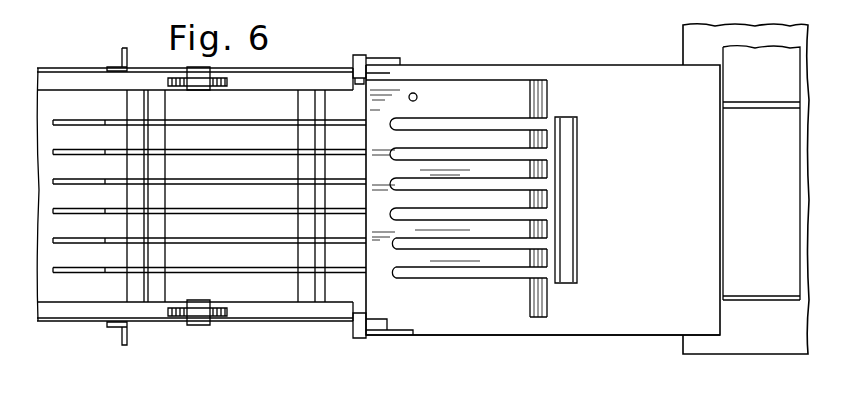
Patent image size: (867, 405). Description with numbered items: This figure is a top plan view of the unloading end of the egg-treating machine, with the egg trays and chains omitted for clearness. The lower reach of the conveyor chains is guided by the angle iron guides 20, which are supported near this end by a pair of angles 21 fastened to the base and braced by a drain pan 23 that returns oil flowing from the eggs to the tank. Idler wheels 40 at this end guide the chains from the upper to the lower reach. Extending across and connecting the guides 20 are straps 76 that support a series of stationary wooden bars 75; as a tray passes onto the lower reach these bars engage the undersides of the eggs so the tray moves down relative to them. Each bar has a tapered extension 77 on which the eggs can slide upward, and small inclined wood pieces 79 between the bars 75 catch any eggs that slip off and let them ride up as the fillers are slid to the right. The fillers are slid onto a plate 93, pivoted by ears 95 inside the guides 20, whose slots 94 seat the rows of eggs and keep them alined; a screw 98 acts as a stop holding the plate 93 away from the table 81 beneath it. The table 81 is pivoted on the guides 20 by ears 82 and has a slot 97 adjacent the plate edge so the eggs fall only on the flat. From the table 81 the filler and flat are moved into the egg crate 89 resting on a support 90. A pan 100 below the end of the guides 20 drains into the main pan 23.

The angle iron guides 20 is at (307, 325).
The angles 21 is at (128, 333).
The drain pan 23 is at (50, 298).
The idler wheels 40 is at (226, 318).
The stationary wooden bars 75 is at (260, 195).
The straps 76 is at (166, 287).
The tapered extension 77 is at (95, 142).
The inclined wood pieces 79 is at (336, 218).
The table 81 is at (634, 334).
The ears 82 is at (368, 338).
The egg crate 89 is at (768, 302).
The support 90 is at (725, 354).
The plate 93 is at (497, 82).
The slots 94 is at (497, 275).
The ears 95 is at (370, 317).
The slot 97 is at (571, 172).
The screw 98 is at (418, 97).
The pan 100 is at (130, 283).